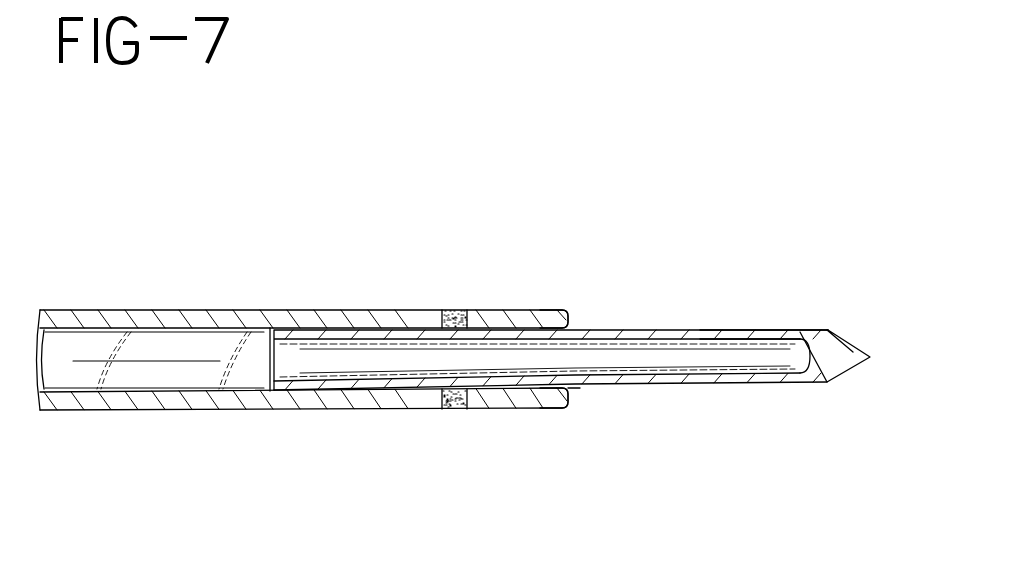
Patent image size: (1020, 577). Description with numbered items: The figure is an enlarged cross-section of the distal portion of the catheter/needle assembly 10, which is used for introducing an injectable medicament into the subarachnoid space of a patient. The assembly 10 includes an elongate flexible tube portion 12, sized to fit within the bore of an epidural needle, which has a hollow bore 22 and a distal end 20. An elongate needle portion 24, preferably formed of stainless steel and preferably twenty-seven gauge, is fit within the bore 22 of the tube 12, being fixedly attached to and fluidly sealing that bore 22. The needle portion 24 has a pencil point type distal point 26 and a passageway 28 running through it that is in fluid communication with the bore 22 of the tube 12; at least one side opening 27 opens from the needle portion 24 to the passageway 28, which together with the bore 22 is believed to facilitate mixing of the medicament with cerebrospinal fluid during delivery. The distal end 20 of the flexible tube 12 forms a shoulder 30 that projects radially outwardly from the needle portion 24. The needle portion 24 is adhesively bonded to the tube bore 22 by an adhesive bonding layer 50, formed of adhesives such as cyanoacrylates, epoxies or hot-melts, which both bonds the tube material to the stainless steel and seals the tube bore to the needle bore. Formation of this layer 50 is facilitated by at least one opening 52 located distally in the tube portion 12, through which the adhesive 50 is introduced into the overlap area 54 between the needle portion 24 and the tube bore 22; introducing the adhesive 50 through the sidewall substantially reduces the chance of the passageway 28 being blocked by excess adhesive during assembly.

The catheter/needle assembly 10 is at (476, 128).
The flexible tube portion 12 is at (162, 312).
The distal end 20 is at (552, 308).
The hollow bore 22 is at (192, 390).
The needle portion 24 is at (660, 330).
The distal point 26 is at (870, 357).
The side opening 27 is at (760, 330).
The passageway 28 is at (358, 363).
The shoulder 30 is at (570, 407).
The adhesive bonding layer 50 is at (460, 410).
The opening 52 is at (455, 310).
The overlap area 54 is at (573, 387).